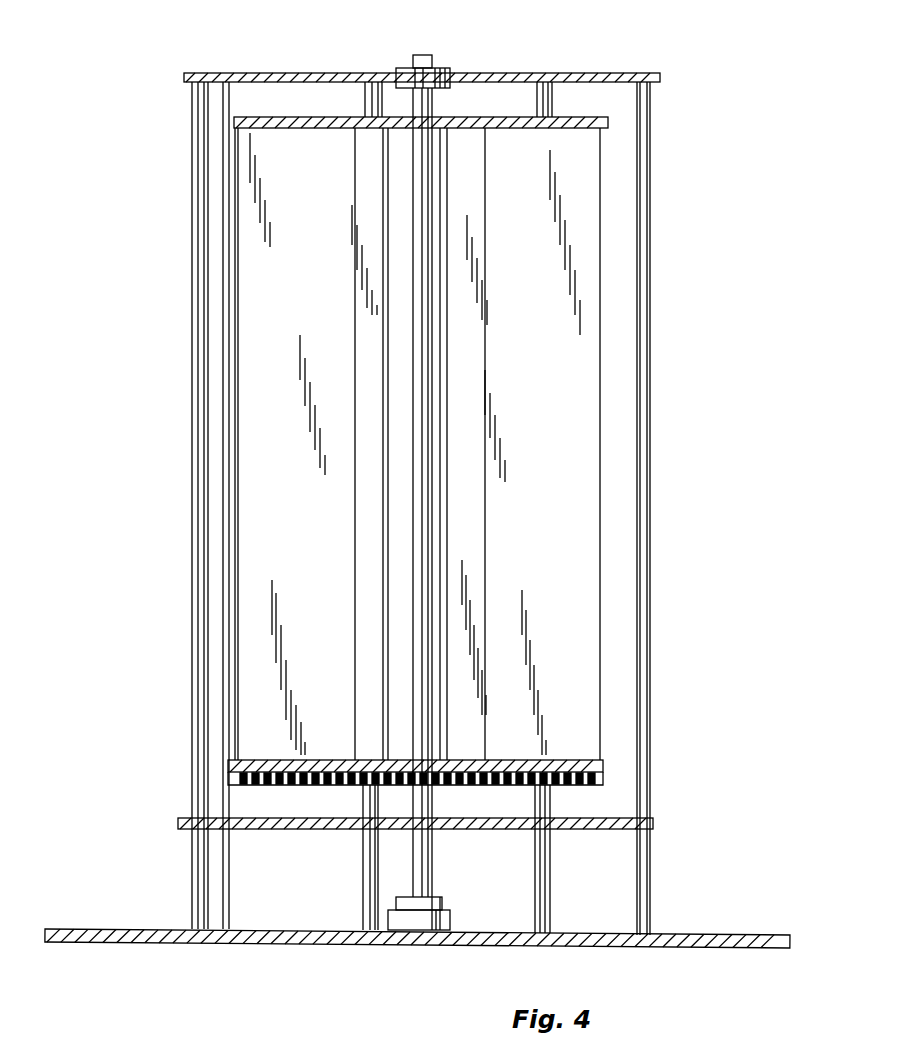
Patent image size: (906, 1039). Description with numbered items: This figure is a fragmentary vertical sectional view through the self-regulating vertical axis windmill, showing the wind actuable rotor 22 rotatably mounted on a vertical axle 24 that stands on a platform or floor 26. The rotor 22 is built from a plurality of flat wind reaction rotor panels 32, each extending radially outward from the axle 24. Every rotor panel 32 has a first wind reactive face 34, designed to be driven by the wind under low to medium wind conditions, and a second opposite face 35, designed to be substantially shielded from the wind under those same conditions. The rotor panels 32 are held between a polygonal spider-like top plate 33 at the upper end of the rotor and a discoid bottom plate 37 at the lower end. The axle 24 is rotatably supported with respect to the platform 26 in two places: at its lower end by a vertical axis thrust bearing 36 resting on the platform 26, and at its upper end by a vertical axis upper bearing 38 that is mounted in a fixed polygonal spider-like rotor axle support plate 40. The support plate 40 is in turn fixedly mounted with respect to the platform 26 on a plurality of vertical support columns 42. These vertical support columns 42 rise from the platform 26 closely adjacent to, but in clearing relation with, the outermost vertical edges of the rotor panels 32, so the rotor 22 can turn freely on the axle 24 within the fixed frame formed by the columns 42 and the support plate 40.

The wind actuable rotor 22 is at (605, 168).
The vertical axle 24 is at (420, 55).
The platform 26 is at (688, 938).
The wind reaction rotor panels 32 is at (583, 390).
The polygonal spider-like top plate 33 is at (610, 122).
The first wind reactive face 34 is at (258, 263).
The second opposite face 35 is at (583, 448).
The vertical axis thrust bearing 36 is at (410, 903).
The discoid bottom plate 37 is at (603, 775).
The vertical axis upper bearing 38 is at (450, 78).
The rotor axle support plate 40 is at (595, 75).
The vertical support columns 42 is at (200, 334).